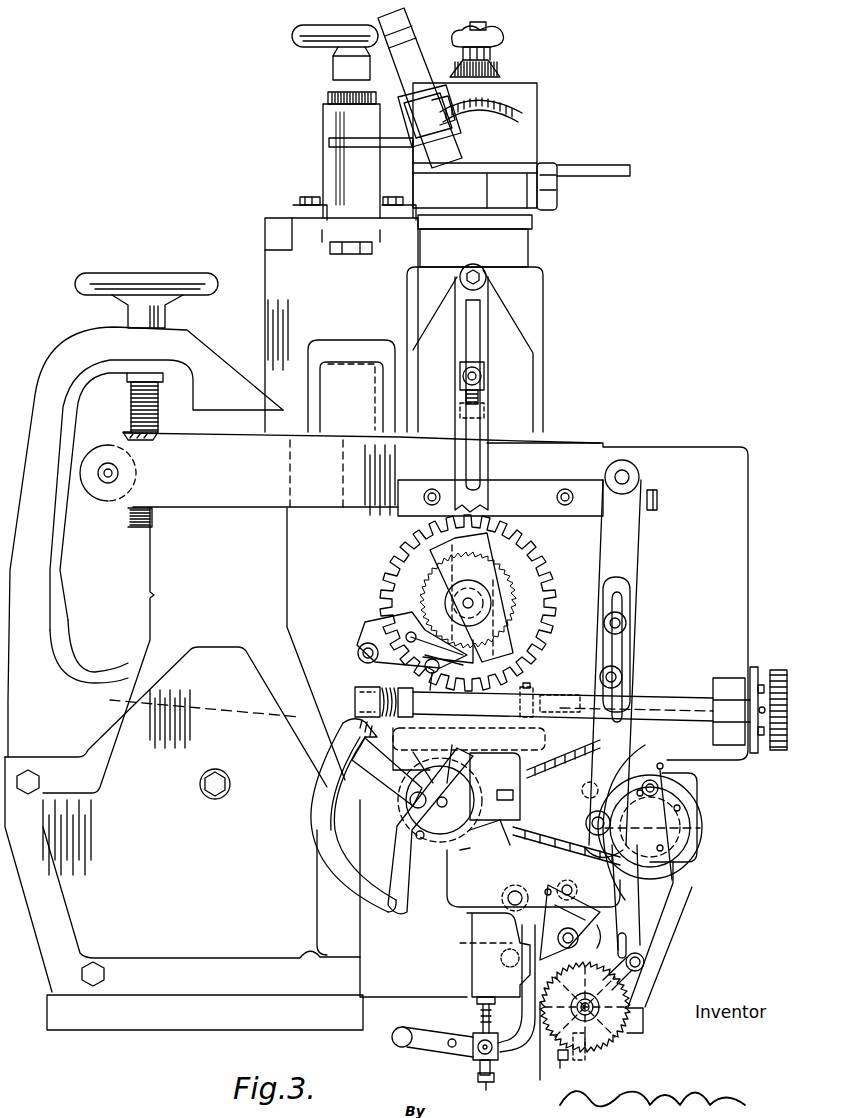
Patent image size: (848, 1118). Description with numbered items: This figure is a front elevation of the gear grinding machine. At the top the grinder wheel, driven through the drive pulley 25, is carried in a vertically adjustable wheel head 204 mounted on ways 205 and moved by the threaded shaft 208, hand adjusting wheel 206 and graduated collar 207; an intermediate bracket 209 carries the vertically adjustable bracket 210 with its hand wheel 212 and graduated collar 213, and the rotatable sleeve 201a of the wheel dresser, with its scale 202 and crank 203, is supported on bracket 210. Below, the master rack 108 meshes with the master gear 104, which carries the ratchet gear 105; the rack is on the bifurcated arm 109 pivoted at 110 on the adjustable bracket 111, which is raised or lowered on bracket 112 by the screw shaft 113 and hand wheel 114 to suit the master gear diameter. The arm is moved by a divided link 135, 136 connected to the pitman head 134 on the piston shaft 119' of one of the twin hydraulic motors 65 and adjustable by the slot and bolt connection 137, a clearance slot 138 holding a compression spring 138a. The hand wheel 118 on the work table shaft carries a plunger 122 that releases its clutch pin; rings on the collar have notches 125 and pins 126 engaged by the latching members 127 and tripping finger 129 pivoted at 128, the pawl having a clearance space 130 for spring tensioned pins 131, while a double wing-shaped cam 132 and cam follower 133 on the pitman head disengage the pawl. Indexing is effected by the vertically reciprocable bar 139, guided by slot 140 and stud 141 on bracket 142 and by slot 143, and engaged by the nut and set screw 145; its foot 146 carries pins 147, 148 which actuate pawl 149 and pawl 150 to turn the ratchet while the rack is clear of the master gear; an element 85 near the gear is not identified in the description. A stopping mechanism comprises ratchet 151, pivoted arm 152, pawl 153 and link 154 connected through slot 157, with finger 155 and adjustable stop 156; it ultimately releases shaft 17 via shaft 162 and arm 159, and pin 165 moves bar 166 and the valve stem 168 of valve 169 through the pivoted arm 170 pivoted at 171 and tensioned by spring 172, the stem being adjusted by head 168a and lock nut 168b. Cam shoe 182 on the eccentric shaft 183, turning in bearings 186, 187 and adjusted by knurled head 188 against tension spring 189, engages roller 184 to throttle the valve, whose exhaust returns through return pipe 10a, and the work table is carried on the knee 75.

The shaft 17 is at (505, 905).
The drive pulley 25 is at (351, 386).
The twin motors 65 is at (690, 812).
The knee 75 is at (688, 852).
The gear 85 is at (425, 548).
The master gear 104 is at (545, 575).
The ratchet gear 105 is at (510, 610).
The master rack 108 is at (500, 498).
The arm 109 is at (361, 474).
The pivot 110 is at (120, 472).
The adjustable bracket 111 is at (128, 514).
The bracket 112 is at (236, 678).
The screw shaft 113 is at (133, 398).
The hand wheel 114 is at (172, 283).
The hand wheel 118 is at (323, 815).
The piston shaft 119' is at (679, 819).
The plunger 122 is at (425, 812).
The notch 125 is at (469, 749).
The pins 126 is at (418, 835).
The latching members 127 is at (480, 866).
The pivot center 128 is at (563, 759).
The tripping finger 129 is at (520, 830).
The clearance space 130 is at (440, 793).
The spring tensioned pins 131 is at (502, 783).
The double wing-shaped cam 132 is at (580, 822).
The cam follower 133 is at (540, 790).
The pitman head 134 is at (640, 772).
The connection link 135 is at (630, 652).
The link 136 is at (640, 557).
The slot and bolt connection 137 is at (618, 620).
The clearance slot 138 is at (566, 846).
The compression spring 138a is at (700, 829).
The vertically reciprocable bar 139 is at (488, 335).
The slot 140 is at (478, 303).
The stud 141 is at (487, 272).
The bracket 142 is at (507, 320).
The slot 143 is at (456, 659).
The nut and set screw 145 is at (485, 388).
The foot 146 is at (365, 655).
The pin 147 is at (366, 645).
The pin 148 is at (442, 684).
The pawl 149 is at (463, 650).
The pawl 150 is at (395, 600).
The ratchet 151 is at (640, 1000).
The pivoted arm 152 is at (642, 982).
The pawl 153 is at (637, 958).
The link 154 is at (632, 892).
The finger 155 is at (597, 1052).
The adjustable stop 156 is at (573, 1062).
The slot 157 is at (625, 940).
The arm 159 is at (575, 892).
The shaft 162 is at (523, 928).
The pin 165 is at (453, 702).
The bar 166 is at (522, 988).
The valve stem 168 is at (477, 1002).
The head 168a is at (492, 1090).
The lock nut 168b is at (496, 1063).
The valve 169 is at (470, 960).
The pivoted arm 170 is at (432, 1050).
The pivot 171 is at (398, 1042).
The spring 172 is at (440, 1028).
The cam shoe 182 is at (530, 684).
The shaft 183 is at (656, 706).
The roller 184 is at (530, 706).
The bearing 186 is at (732, 682).
The bearing 187 is at (360, 690).
The knurled head 188 is at (778, 668).
The tension spring 189 is at (355, 712).
The rotatable sleeve 201a is at (558, 192).
The scale 202 is at (518, 108).
The crank 203 is at (374, 12).
The wheel head 204 is at (341, 325).
The ways 205 is at (400, 252).
The hand adjusting wheel 206 is at (318, 46).
The graduated collar 207 is at (330, 98).
The threaded shaft 208 is at (373, 222).
The intermediate bracket 209 is at (538, 133).
The vertically adjustable bracket 210 is at (532, 221).
The hand wheel 212 is at (503, 36).
The graduated collar 213 is at (512, 70).
The return pipe 10a is at (472, 936).